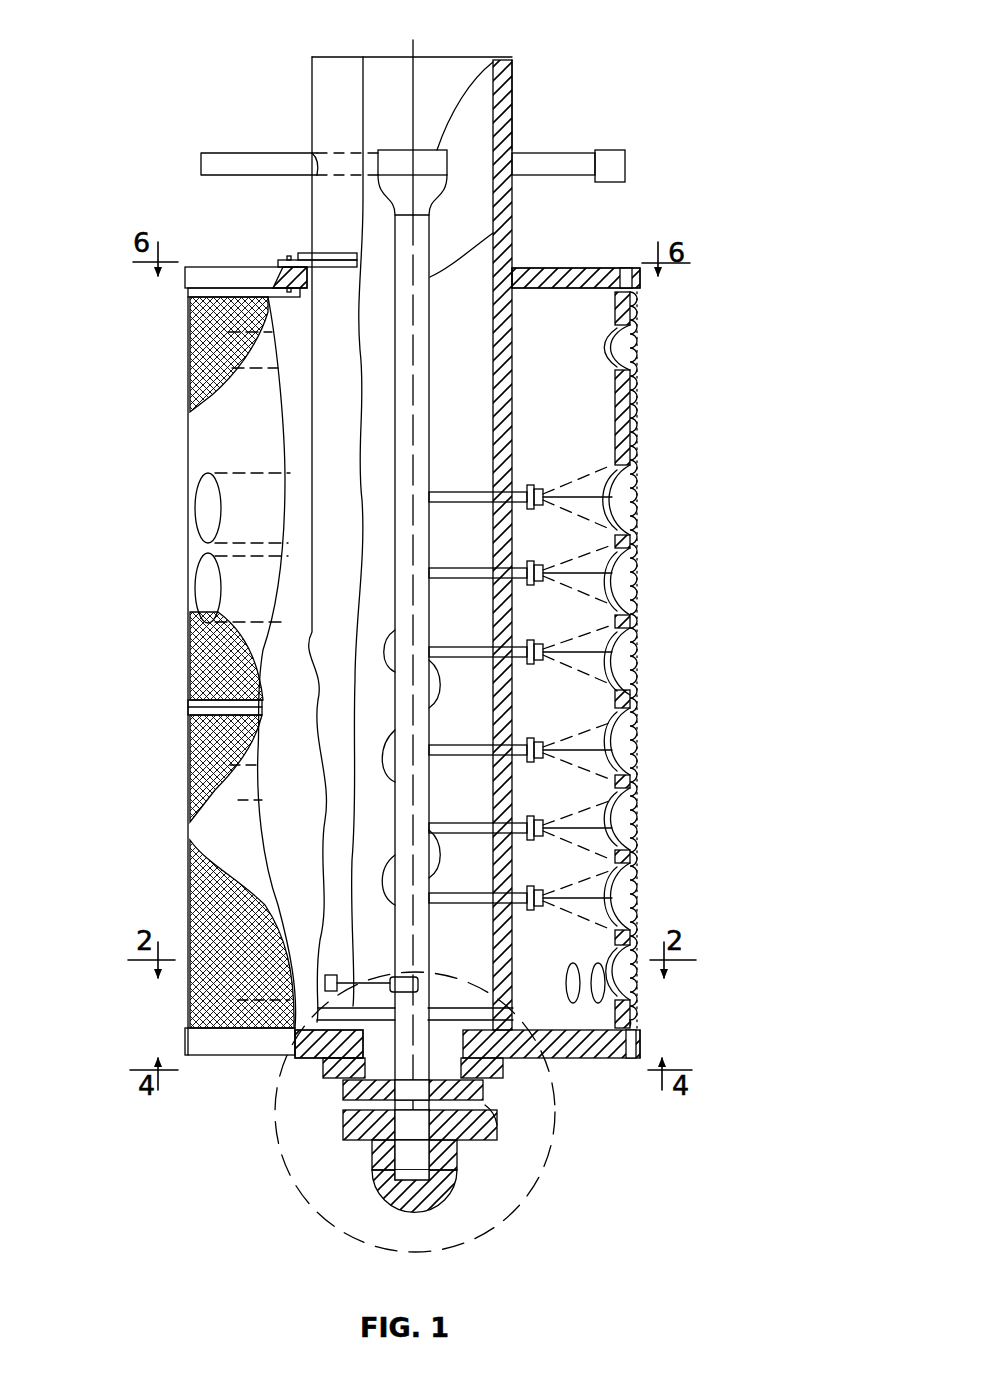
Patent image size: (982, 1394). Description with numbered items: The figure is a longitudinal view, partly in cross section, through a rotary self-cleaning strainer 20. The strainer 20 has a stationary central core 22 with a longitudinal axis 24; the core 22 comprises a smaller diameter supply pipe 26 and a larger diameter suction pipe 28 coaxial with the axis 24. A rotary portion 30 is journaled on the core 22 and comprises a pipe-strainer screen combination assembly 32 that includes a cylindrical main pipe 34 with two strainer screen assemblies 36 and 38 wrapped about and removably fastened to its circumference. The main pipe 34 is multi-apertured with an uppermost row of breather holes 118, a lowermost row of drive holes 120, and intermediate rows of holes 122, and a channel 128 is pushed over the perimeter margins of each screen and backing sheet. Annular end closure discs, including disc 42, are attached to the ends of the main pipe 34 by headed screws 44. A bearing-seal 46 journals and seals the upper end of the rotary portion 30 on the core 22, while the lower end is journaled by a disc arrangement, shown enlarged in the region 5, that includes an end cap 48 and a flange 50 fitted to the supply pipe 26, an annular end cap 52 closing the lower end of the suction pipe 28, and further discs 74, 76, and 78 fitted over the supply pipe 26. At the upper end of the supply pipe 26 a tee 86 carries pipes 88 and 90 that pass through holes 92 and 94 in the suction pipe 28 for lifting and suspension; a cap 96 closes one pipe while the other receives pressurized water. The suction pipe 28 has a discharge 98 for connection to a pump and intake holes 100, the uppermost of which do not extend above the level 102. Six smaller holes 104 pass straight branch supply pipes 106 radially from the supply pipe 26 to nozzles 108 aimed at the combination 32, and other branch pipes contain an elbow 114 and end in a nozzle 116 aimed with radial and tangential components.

The detail view region 5 is at (512, 1222).
The rotary self-cleaning strainer 20 is at (730, 272).
The central core 22 is at (518, 58).
The longitudinal axis 24 is at (418, 105).
The supply pipe 26 is at (510, 232).
The suction pipe 28 is at (512, 85).
The rotary portion 30 is at (585, 266).
The pipe-strainer screen combination assembly 32 is at (642, 322).
The main pipe 34 is at (218, 432).
The strainer screen assembly 36 is at (188, 312).
The strainer screen assembly 38 is at (188, 746).
The end closure disc 42 is at (232, 1056).
The headed screws 44 is at (190, 267).
The bearing-seal 46 is at (296, 252).
The end cap 48 is at (380, 1215).
The flange 50 is at (458, 1165).
The end cap 52 is at (320, 1058).
The circular annular disc 74 is at (490, 1090).
The circular annular disc 76 is at (497, 1122).
The circular annular disc 78 is at (478, 1128).
The tee 86 is at (484, 62).
The pipe 88 is at (210, 153).
The pipe 90 is at (555, 153).
The hole 92 is at (310, 160).
The hole 94 is at (540, 153).
The cap 96 is at (625, 162).
The discharge 98 is at (380, 57).
The holes 100 is at (280, 630).
The level 102 is at (700, 600).
The holes 104 is at (512, 480).
The straight branch supply pipes 106 is at (462, 490).
The nozzles 108 is at (538, 485).
The elbow 114 is at (402, 977).
The nozzle 116 is at (252, 1048).
The breather holes 118 is at (186, 352).
The drive holes 120 is at (185, 990).
The holes 122 is at (195, 512).
The channel 128 is at (188, 710).